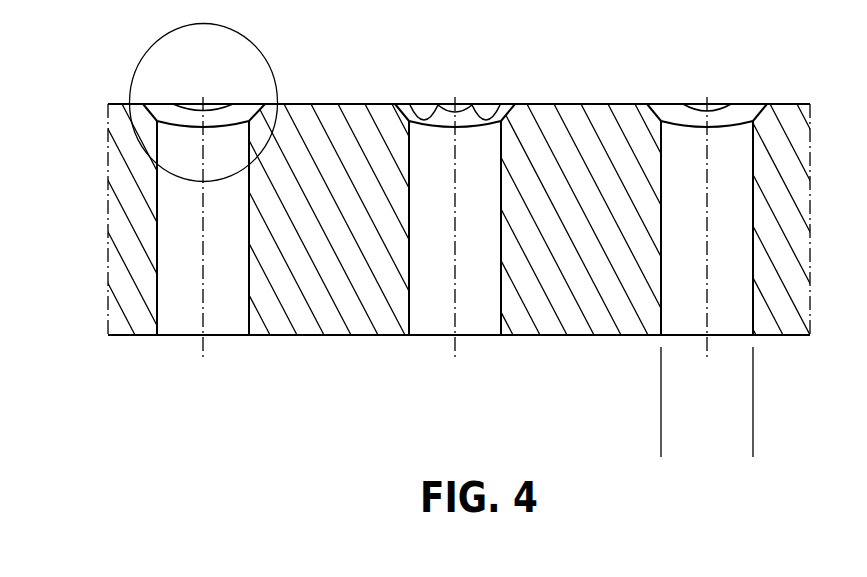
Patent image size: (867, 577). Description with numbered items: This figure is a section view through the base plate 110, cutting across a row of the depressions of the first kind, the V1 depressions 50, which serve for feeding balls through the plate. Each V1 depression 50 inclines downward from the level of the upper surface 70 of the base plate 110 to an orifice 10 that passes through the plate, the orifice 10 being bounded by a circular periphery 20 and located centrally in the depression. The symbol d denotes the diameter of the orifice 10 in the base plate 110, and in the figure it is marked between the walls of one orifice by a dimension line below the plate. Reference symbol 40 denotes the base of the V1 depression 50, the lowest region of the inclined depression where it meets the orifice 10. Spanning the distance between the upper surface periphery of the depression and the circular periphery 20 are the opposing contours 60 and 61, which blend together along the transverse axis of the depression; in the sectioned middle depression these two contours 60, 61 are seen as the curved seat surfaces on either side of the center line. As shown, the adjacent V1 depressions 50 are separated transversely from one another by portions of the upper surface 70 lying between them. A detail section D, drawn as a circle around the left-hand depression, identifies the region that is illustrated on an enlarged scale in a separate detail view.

The orifice 10 is at (178, 310).
The circular periphery 20 is at (205, 126).
The base of the V1 depression 40 is at (150, 107).
The V1 depression 50 is at (232, 113).
The opposing contour 60 is at (413, 117).
The opposing contour 61 is at (493, 110).
The upper surface 70 is at (560, 105).
The base plate 110 is at (578, 275).
The detail section D is at (257, 158).
The diameter of the orifice d is at (637, 448).